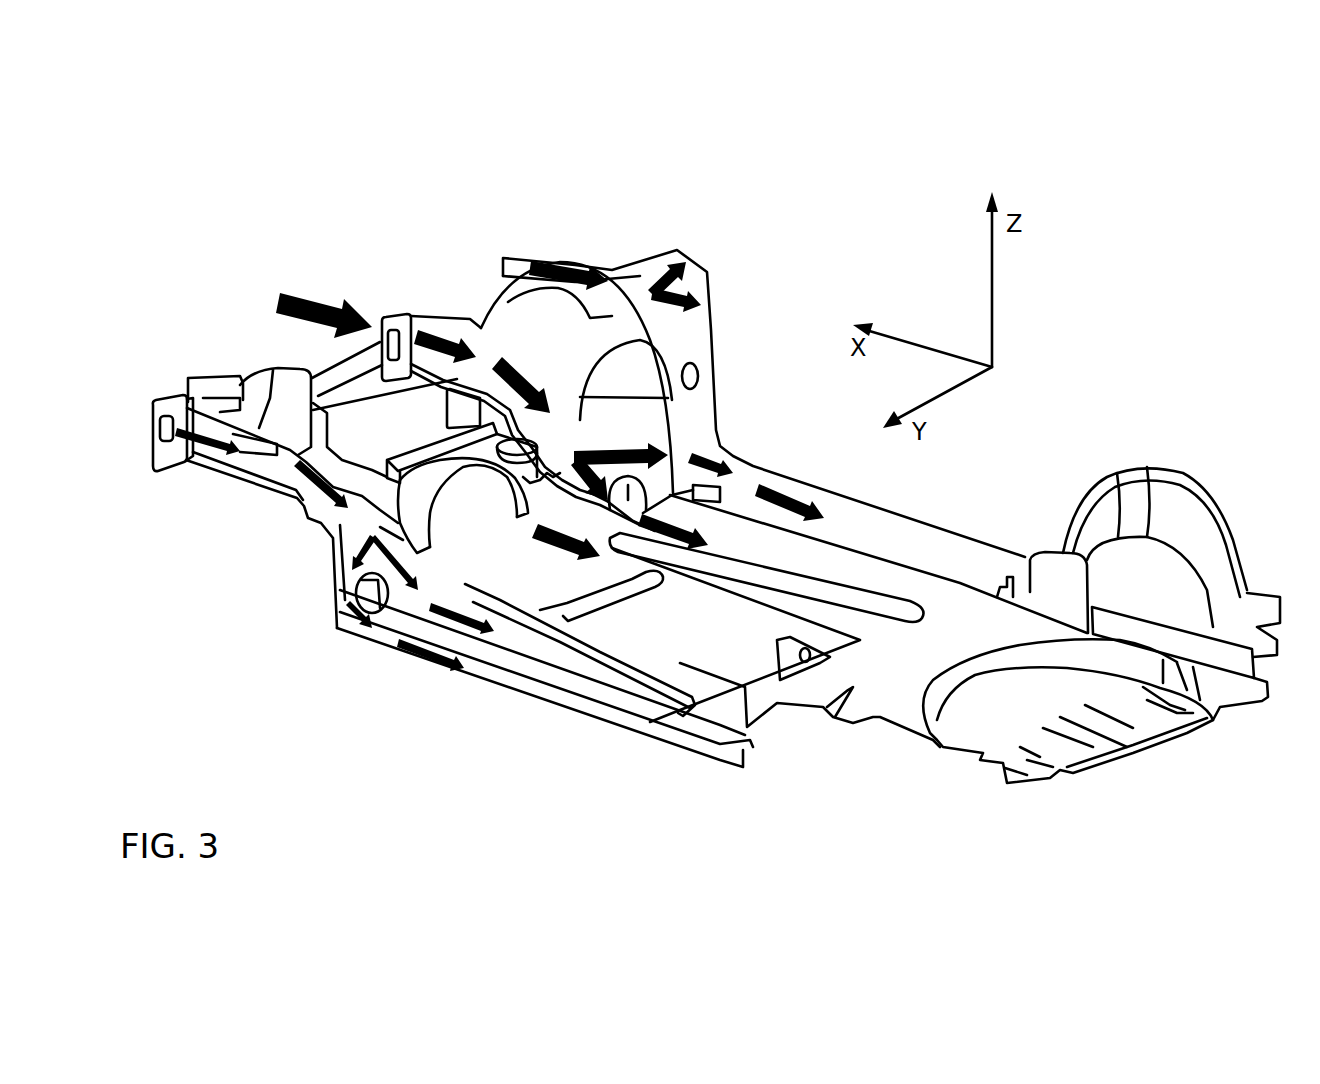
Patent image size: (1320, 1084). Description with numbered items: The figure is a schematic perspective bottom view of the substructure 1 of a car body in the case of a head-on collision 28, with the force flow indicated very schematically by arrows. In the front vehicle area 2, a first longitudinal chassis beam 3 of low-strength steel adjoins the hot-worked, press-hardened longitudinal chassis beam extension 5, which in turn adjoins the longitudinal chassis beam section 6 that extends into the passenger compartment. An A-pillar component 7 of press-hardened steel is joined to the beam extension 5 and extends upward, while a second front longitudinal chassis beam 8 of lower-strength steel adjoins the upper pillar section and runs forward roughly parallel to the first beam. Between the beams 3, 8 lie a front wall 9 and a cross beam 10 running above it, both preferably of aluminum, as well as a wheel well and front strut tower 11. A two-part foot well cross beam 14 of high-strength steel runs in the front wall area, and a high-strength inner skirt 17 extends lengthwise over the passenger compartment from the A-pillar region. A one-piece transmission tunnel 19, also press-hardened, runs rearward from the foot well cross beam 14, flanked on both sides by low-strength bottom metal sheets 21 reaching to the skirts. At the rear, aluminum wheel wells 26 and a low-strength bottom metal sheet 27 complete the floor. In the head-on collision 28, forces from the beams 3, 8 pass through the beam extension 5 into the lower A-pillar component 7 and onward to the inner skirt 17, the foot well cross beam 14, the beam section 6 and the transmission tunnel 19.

The substructure 1 is at (784, 250).
The front vehicle area 2 is at (392, 240).
The first longitudinal chassis beam 3 is at (429, 323).
The longitudinal chassis beam extension 5 is at (634, 428).
The longitudinal chassis beam section 6 is at (768, 563).
The A-pillar component 7 is at (705, 338).
The second front longitudinal chassis beam 8 is at (201, 378).
The front wall 9 is at (402, 426).
The cross beam 10 is at (466, 314).
The wheel well and front strut tower 11 is at (287, 375).
The foot well cross beam 14 is at (461, 476).
The inner skirt 17 is at (932, 553).
The transmission tunnel 19 is at (719, 606).
The bottom metal sheet 21 is at (729, 571).
The wheel well 26 is at (1160, 487).
The bottom metal sheet 27 is at (1031, 702).
The head-on collision 28 is at (316, 296).